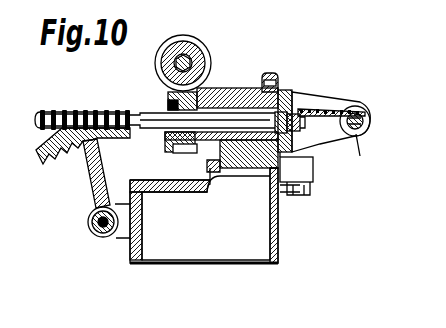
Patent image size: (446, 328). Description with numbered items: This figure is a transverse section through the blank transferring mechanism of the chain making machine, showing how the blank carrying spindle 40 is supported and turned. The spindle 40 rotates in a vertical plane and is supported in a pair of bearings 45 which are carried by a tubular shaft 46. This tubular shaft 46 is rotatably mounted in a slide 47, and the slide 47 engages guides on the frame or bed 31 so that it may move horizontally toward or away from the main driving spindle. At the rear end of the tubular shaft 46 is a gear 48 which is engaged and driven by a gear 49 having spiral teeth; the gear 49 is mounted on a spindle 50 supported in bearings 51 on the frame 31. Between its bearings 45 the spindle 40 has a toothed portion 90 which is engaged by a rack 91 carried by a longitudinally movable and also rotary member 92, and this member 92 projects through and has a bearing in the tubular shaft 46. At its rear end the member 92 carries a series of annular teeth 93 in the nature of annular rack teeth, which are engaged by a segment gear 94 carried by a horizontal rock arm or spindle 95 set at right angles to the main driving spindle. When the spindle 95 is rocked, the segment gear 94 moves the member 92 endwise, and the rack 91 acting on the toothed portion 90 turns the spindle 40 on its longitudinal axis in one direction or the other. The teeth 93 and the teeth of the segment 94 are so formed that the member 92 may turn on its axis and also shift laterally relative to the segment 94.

The frame or bed 31 is at (279, 237).
The spindle 40 is at (366, 115).
The bearings 45 is at (368, 130).
The tubular shaft 46 is at (243, 90).
The slide 47 is at (282, 88).
The gear 48 is at (172, 151).
The gear 49 is at (203, 55).
The spindle 50 is at (170, 65).
The bearings 51 is at (210, 86).
The toothed portion 90 is at (366, 152).
The rack 91 is at (318, 108).
The longitudinally movable and rotary member 92 is at (148, 112).
The annular teeth 93 is at (107, 110).
The segment gear 94 is at (63, 156).
The horizontal rock arm or spindle 95 is at (89, 224).